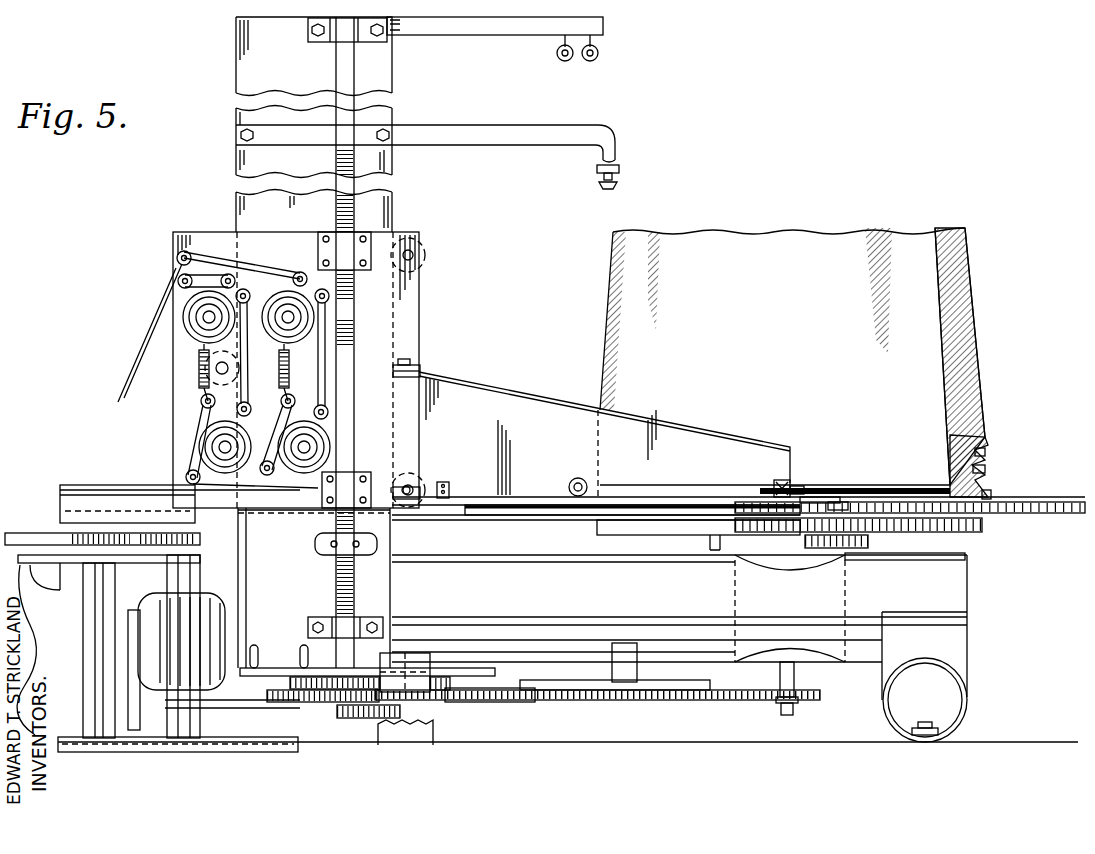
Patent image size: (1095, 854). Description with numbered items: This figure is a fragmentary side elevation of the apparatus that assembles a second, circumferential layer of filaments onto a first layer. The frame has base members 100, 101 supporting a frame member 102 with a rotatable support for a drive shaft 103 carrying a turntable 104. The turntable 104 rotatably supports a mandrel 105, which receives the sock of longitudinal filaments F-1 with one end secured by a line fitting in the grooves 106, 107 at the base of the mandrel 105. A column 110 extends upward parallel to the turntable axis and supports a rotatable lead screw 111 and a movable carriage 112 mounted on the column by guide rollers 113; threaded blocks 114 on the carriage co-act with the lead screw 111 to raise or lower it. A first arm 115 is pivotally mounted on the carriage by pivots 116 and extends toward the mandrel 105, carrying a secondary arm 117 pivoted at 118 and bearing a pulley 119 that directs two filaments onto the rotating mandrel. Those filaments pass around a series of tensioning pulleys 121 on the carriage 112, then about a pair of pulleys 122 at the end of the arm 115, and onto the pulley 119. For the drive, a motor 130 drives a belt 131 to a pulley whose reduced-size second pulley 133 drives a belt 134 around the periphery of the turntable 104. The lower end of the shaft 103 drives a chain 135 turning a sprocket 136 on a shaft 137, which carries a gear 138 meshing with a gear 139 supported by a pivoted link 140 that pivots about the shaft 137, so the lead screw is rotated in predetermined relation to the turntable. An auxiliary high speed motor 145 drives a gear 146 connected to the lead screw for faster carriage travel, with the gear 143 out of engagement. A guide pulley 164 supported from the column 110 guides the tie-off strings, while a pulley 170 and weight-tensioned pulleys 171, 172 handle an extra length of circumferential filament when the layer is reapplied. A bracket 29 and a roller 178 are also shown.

The base member 100 is at (418, 727).
The base member 101 is at (968, 705).
The frame member 102 is at (860, 650).
The drive shaft 103 is at (796, 710).
The turntable 104 is at (1030, 518).
The mandrel 105 is at (985, 440).
The groove 106 is at (986, 455).
The groove 107 is at (986, 472).
The locking bolt 29 is at (992, 492).
The column 110 is at (394, 185).
The lead screw 111 is at (358, 338).
The carriage 112 is at (218, 238).
The guide rollers 113 is at (232, 384).
The threaded blocks 114 is at (345, 240).
The first arm 115 is at (558, 412).
The pivots 116 is at (412, 364).
The secondary arm 117 is at (820, 497).
The pivot 118 is at (772, 492).
The pulley 119 is at (840, 500).
The pulleys 121 is at (278, 300).
The pulleys 122 is at (800, 478).
The motor 130 is at (50, 578).
The belt 131 is at (198, 540).
The second pulley 133 is at (82, 508).
The belt 134 is at (535, 515).
The chain 135 is at (540, 702).
The sprocket 136 is at (470, 704).
The shaft 137 is at (405, 653).
The gear 138 is at (448, 676).
The gear 139 is at (300, 660).
The pivoted link 140 is at (370, 668).
The gear 143 is at (268, 702).
The auxiliary high speed motor 145 is at (165, 665).
The gear 146 is at (285, 712).
The guide pulley 164 is at (618, 186).
The pulley 170 is at (455, 488).
The tensioning pulley 171 is at (558, 58).
The tensioning pulley 172 is at (598, 58).
The roller 178 is at (572, 478).
The filament F-1 is at (970, 385).